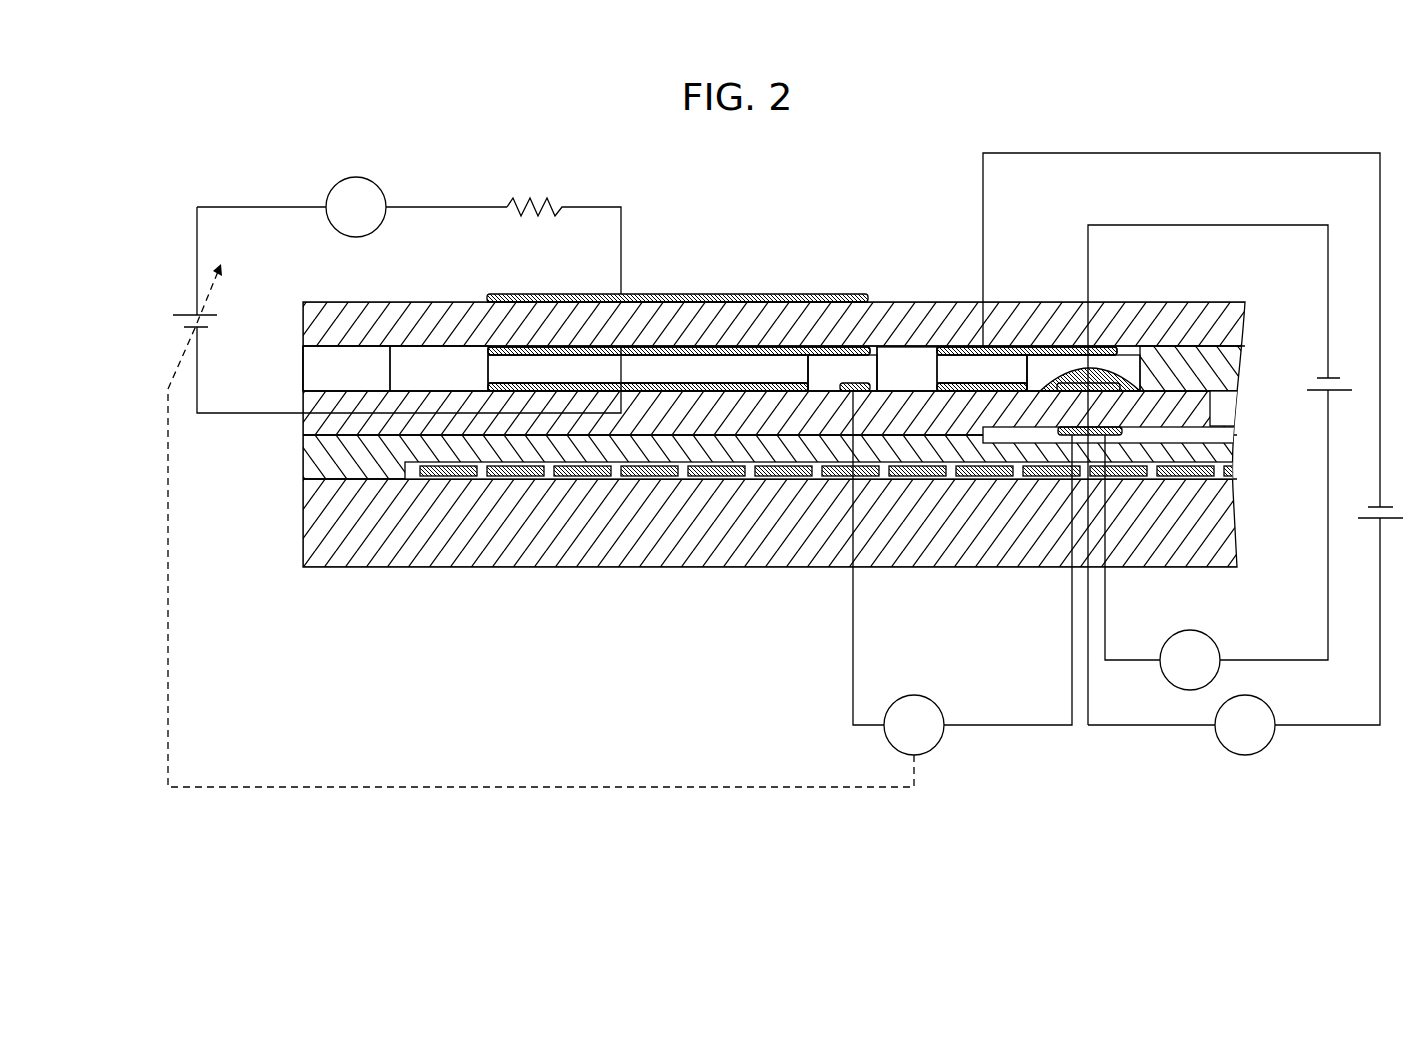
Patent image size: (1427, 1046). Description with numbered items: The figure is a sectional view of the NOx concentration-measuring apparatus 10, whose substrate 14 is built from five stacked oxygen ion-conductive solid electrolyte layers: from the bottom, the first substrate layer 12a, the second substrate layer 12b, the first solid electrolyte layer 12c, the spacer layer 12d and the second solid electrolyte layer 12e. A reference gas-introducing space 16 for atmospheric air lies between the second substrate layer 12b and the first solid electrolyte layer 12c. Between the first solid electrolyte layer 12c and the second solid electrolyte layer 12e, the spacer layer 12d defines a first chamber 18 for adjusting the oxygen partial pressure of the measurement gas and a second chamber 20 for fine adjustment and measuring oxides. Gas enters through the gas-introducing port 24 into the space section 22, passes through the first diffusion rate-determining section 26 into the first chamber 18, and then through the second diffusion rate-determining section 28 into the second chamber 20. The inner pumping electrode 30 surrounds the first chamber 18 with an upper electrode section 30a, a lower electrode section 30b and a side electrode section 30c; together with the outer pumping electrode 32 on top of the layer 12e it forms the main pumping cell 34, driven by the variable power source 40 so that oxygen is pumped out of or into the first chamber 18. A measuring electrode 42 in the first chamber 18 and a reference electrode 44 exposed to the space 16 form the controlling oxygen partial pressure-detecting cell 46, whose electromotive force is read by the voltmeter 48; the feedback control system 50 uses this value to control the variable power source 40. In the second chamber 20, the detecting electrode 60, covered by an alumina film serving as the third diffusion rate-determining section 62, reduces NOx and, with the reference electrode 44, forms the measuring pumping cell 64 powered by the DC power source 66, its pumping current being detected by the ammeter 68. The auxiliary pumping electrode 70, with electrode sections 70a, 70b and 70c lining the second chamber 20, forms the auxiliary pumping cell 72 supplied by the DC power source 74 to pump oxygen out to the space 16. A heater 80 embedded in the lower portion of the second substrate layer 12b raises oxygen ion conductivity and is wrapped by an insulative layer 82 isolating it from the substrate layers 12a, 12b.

The NOx concentration-measuring apparatus 10 is at (910, 179).
The first substrate layer 12a is at (630, 530).
The second substrate layer 12b is at (705, 450).
The first solid electrolyte layer 12c is at (1197, 403).
The spacer layer 12d is at (1242, 367).
The second solid electrolyte layer 12e is at (1242, 328).
The substrate 14 is at (1180, 300).
The reference gas-introducing space 16 is at (1197, 433).
The first chamber 18 is at (788, 370).
The second chamber 20 is at (1040, 370).
The space section 22 is at (350, 375).
The gas-introducing port 24 is at (303, 376).
The first diffusion rate-determining section 26 is at (440, 375).
The second diffusion rate-determining section 28 is at (903, 373).
The inner pumping electrode 30 is at (537, 345).
The electrode section 30a is at (560, 350).
The electrode section 30b is at (535, 392).
The electrode section 30c is at (665, 370).
The outer pumping electrode 32 is at (703, 302).
The main pumping cell 34 is at (740, 292).
The variable power source 40 is at (188, 306).
The measuring electrode 42 is at (832, 370).
The reference electrode 44 is at (1060, 445).
The controlling oxygen partial pressure-detecting cell 46 is at (838, 417).
The voltmeter 48 is at (914, 695).
The feedback control system 50 is at (548, 787).
The detecting electrode 60 is at (1098, 372).
The third diffusion rate-determining section 62 is at (1078, 380).
The measuring pumping cell 64 is at (1128, 435).
The DC power source 66 is at (1332, 374).
The ammeter 68 is at (1190, 630).
The auxiliary pumping electrode 70 is at (1010, 334).
The electrode section 70a is at (958, 373).
The electrode section 70b is at (968, 392).
The electrode section 70c is at (930, 392).
The auxiliary pumping cell 72 is at (1021, 286).
The DC power source 74 is at (1382, 507).
The heater 80 is at (442, 478).
The insulative layer 82 is at (480, 480).